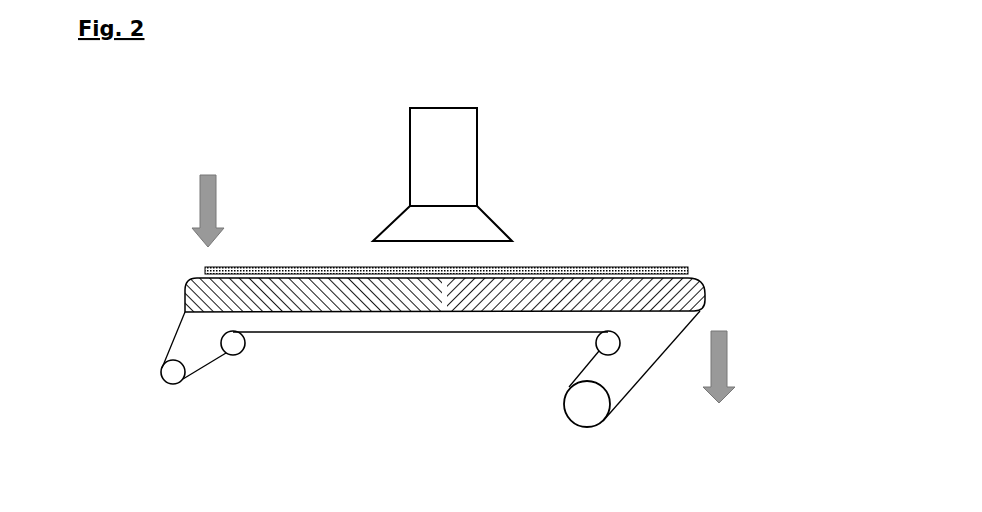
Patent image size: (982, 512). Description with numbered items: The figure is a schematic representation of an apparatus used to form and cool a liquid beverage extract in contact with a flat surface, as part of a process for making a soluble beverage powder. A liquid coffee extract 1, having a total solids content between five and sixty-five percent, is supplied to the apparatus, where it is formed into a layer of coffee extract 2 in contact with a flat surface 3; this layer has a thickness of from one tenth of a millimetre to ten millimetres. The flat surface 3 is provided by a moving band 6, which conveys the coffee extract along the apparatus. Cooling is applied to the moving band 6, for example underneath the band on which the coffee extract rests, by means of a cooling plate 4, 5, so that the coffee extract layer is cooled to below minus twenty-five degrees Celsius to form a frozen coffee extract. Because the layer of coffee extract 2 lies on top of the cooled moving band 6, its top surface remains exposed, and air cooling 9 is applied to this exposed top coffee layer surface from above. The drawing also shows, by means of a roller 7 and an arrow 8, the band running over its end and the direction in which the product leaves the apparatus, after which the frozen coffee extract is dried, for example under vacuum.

The liquid coffee extract 1 is at (194, 200).
The layer of coffee extract 2 is at (308, 262).
The flat surface 3 is at (358, 280).
The cooling plate 4 is at (318, 316).
The cooling plate 5 is at (492, 313).
The moving band 6 is at (166, 330).
The drive roller 7 is at (587, 428).
The discharge direction arrow 8 is at (735, 363).
The air cooling 9 is at (487, 155).